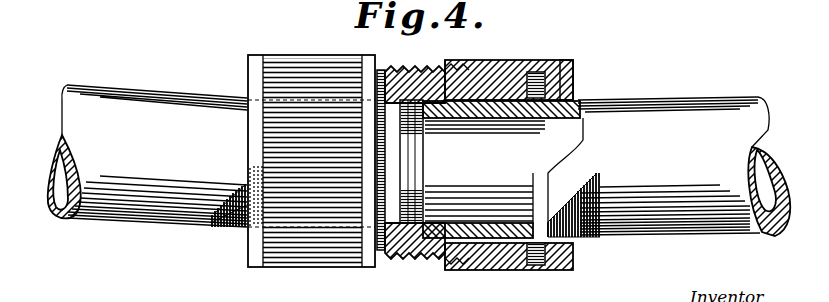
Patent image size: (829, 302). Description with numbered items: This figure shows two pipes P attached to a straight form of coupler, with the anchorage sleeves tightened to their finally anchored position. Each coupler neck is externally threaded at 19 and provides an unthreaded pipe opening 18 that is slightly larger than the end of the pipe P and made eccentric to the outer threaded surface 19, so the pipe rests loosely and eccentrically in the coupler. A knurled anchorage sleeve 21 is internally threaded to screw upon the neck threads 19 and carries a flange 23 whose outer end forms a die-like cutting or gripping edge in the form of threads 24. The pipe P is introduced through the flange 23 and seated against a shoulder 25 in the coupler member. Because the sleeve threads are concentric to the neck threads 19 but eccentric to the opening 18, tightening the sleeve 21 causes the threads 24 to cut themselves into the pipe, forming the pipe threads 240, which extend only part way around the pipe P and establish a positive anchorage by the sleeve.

The pipe P is at (97, 207).
The pipe threads 240 is at (246, 228).
The anchorage sleeve 21 is at (307, 260).
The pipe opening 18 is at (445, 66).
The neck threads 19 is at (434, 70).
The shoulder 25 is at (418, 257).
The cutting threads 24 is at (576, 86).
The flange 23 is at (576, 72).